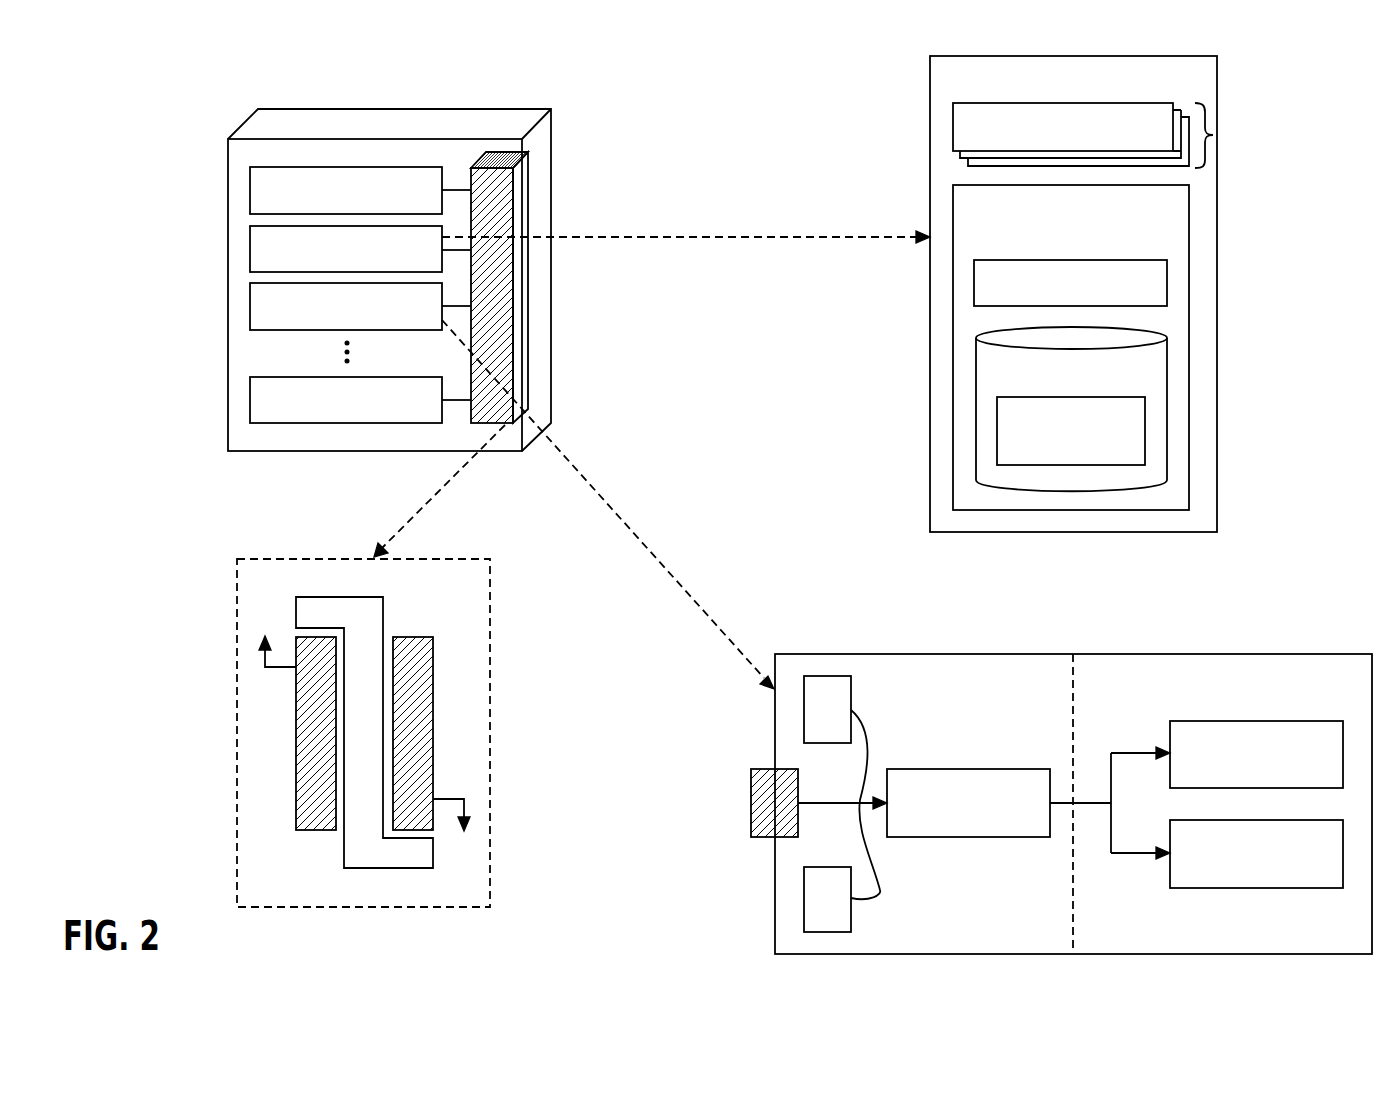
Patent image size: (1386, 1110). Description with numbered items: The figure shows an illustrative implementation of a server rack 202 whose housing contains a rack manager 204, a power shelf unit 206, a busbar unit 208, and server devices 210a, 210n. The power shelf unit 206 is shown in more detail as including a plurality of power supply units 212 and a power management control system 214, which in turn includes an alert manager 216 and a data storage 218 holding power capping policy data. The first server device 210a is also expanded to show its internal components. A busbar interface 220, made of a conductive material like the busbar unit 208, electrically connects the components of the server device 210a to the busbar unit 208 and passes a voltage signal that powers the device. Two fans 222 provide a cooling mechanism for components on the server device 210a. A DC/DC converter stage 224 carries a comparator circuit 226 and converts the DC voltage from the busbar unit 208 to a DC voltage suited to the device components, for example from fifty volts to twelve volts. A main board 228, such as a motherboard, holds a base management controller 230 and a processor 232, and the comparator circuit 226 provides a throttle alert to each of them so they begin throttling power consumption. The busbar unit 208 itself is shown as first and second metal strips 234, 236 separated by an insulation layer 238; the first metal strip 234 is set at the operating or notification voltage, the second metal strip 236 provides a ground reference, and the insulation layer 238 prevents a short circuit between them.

The server rack 202 is at (410, 109).
The rack manager 204 is at (250, 192).
The power shelf unit 206 is at (250, 250).
The busbar unit 208 is at (497, 425).
The first server device 210a is at (250, 307).
The server device 210n is at (250, 401).
The power supply units 212 is at (1213, 135).
The power management control system 214 is at (1071, 347).
The alert manager 216 is at (1070, 283).
The data storage 218 is at (1071, 409).
The busbar interface 220 is at (751, 804).
The fans 222 is at (860, 804).
The DC/DC converter stage 224 is at (909, 654).
The comparator circuit 226 is at (968, 803).
The main board 228 is at (1268, 654).
The base management controller 230 is at (1256, 754).
The processor 232 is at (1256, 854).
The first metal strip 234 is at (296, 728).
The second metal strip 236 is at (433, 722).
The insulation layer 238 is at (389, 869).